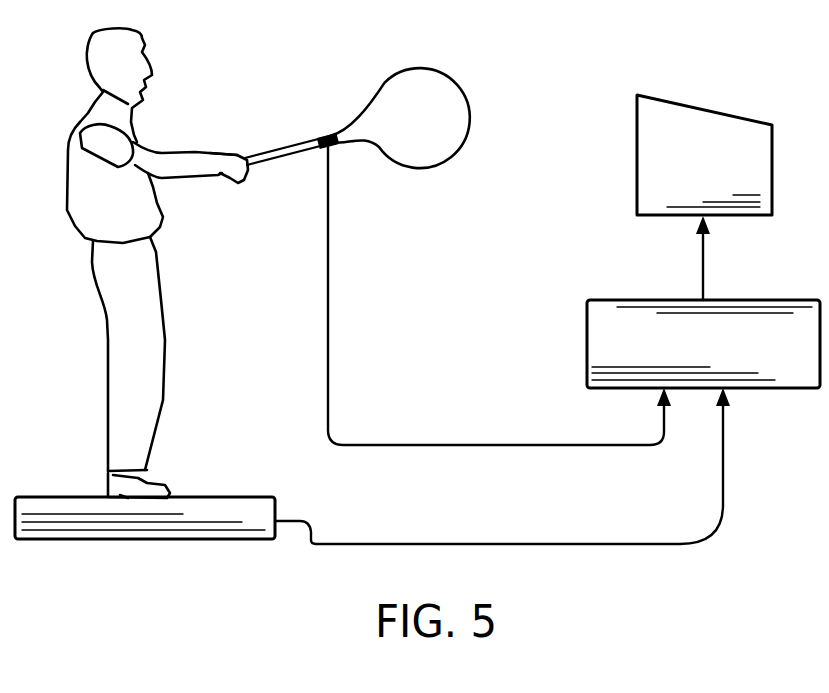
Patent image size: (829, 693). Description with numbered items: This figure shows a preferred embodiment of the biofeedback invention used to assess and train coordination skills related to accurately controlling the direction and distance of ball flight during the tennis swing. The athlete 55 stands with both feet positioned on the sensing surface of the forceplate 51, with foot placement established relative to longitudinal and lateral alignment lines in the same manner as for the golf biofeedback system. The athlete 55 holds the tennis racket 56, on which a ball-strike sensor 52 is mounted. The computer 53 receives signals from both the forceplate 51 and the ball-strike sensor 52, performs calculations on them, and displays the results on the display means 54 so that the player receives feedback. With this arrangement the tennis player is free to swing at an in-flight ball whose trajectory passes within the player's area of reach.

The forceplate 51 is at (235, 497).
The ball-strike sensor 52 is at (320, 135).
The computer 53 is at (762, 300).
The display means 54 is at (740, 118).
The athlete 55 is at (82, 118).
The tennis racket 56 is at (435, 72).